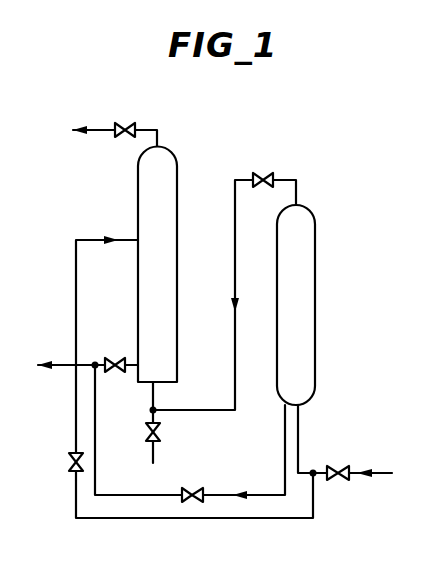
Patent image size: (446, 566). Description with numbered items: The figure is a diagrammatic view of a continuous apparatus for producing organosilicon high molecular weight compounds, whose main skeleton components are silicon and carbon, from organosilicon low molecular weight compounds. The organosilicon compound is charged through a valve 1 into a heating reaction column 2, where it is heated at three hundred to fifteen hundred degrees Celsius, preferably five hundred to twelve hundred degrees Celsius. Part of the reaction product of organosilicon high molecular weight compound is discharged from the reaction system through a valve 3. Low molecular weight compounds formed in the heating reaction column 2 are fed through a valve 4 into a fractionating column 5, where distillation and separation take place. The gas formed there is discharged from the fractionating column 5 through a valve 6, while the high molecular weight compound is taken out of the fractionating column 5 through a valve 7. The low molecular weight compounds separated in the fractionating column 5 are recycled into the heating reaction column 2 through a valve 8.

The valve 1 is at (338, 467).
The heating reaction column 2 is at (316, 305).
The valve 3 is at (194, 486).
The valve 4 is at (264, 173).
The fractionating column 5 is at (177, 258).
The valve 6 is at (126, 123).
The valve 7 is at (117, 358).
The valve 8 is at (69, 459).